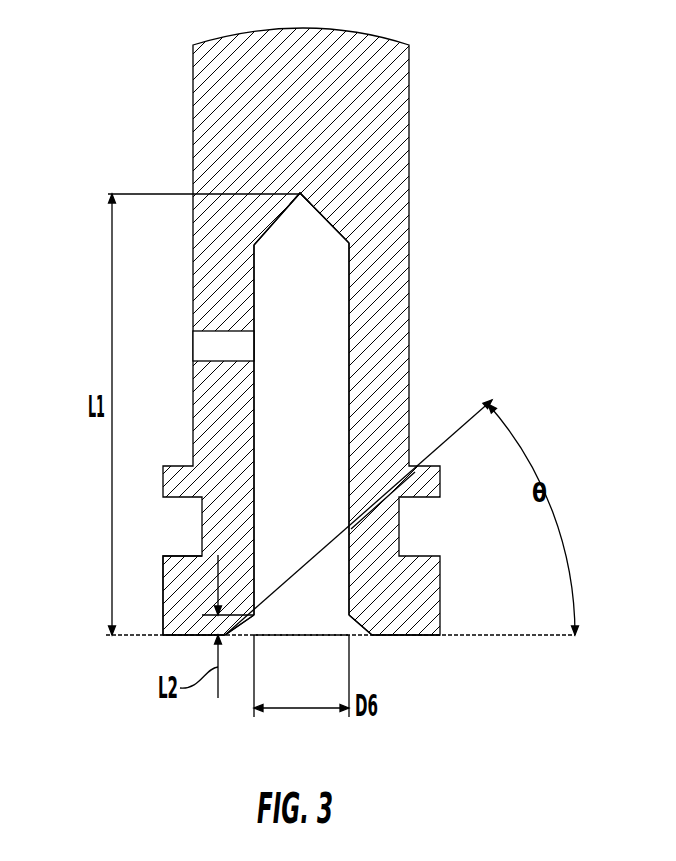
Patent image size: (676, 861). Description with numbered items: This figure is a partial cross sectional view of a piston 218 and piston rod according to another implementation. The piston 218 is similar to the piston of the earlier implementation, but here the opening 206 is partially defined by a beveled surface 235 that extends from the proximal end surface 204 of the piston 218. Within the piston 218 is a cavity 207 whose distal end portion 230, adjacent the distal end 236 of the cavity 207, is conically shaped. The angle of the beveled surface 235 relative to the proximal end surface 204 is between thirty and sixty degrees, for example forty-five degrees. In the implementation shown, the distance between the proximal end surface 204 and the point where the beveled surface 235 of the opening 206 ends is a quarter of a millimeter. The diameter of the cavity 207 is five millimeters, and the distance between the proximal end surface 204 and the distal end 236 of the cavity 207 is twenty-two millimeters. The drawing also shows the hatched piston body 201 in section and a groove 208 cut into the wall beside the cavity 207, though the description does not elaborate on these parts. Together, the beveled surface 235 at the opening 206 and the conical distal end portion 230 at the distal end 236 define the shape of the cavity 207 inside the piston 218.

The nozzle body 201 is at (230, 118).
The distal end of the cavity 236 is at (300, 193).
The distal end portion of cavity 230 is at (277, 221).
The cavity 207 is at (272, 296).
The groove 208 is at (255, 385).
The piston 218 is at (163, 592).
The proximal end surface 204 is at (183, 636).
The opening 206 is at (312, 635).
The beveled surface 235 is at (240, 625).